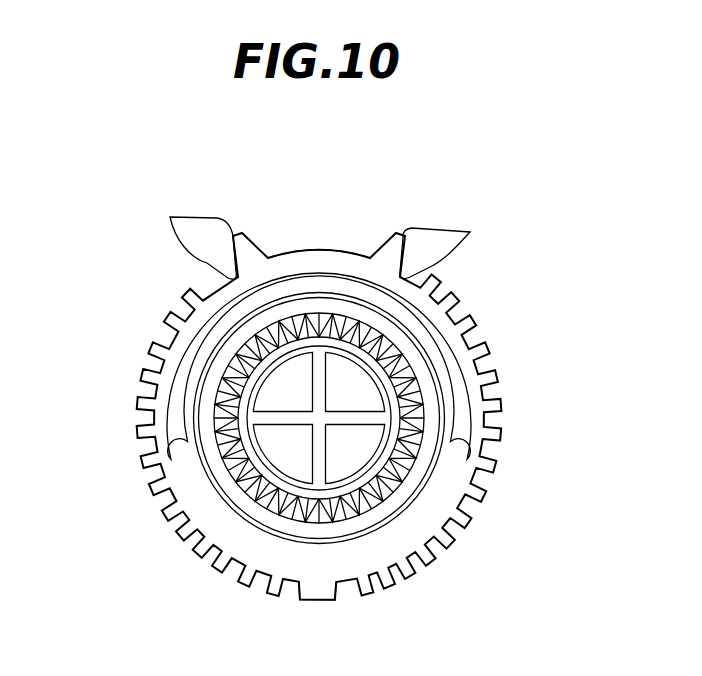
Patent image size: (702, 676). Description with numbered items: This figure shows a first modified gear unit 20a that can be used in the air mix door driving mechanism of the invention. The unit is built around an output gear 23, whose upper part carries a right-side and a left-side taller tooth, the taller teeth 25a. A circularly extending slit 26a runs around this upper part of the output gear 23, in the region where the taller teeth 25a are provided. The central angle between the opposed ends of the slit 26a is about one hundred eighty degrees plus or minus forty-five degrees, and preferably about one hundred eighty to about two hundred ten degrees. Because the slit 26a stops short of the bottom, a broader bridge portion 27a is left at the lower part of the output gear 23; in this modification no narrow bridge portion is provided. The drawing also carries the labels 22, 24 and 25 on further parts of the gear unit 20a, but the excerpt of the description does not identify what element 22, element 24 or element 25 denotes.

The first modified gear unit 20a is at (182, 163).
The gear body 22 is at (456, 374).
The output gear 23 is at (382, 245).
The roller bearing 24 is at (427, 420).
The gear teeth 25 is at (472, 320).
The taller teeth 25a is at (317, 236).
The circularly extending slit 26a is at (199, 338).
The broader bridge portion 27a is at (333, 565).